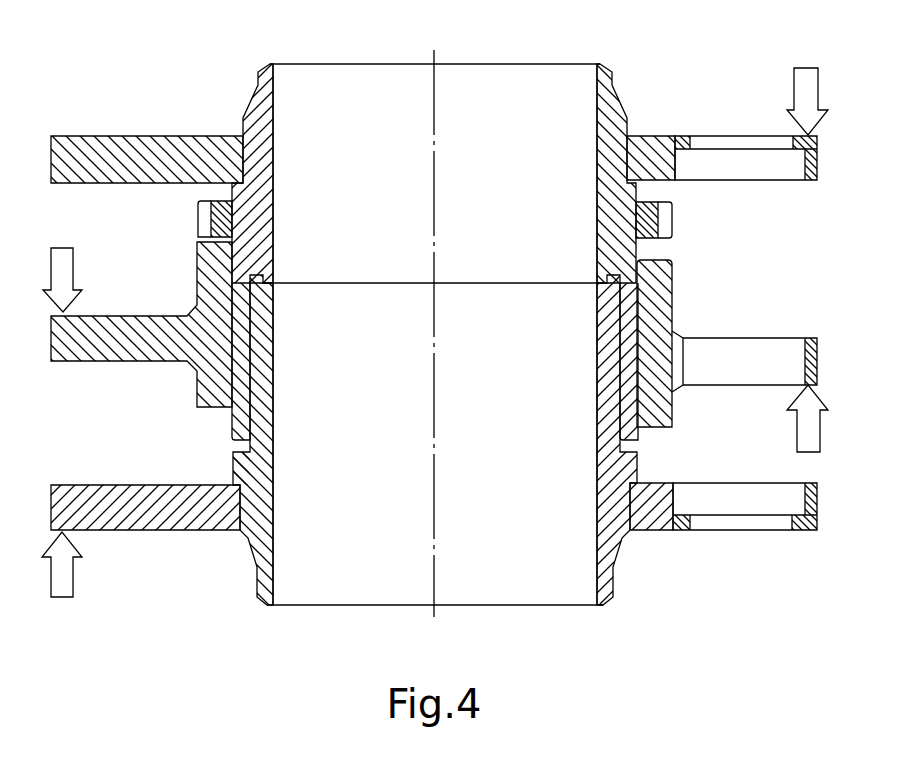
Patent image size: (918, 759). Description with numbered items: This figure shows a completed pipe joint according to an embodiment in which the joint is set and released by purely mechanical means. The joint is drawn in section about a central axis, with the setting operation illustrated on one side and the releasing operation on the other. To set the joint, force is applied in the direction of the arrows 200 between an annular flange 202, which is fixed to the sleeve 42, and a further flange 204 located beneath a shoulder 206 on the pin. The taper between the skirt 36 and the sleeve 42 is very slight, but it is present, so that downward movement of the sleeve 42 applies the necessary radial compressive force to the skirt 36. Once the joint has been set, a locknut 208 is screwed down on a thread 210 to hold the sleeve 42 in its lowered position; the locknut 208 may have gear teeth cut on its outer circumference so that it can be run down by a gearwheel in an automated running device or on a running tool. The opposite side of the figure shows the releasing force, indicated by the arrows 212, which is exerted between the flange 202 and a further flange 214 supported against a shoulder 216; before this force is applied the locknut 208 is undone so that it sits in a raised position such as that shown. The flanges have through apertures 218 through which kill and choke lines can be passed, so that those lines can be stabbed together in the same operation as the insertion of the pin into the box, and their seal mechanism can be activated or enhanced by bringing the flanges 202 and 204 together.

The skirt 36 is at (233, 343).
The sleeve 42 is at (125, 250).
The arrows indicating setting force 200 is at (63, 258).
The annular flange 202 is at (62, 340).
The further flange 204 is at (72, 498).
The shoulder 206 is at (243, 468).
The locknut 208 is at (213, 220).
The thread 210 is at (240, 220).
The arrows indicating releasing force 212 is at (803, 82).
The further flange 214 is at (656, 143).
The shoulder 216 is at (610, 190).
The through apertures 218 is at (757, 170).